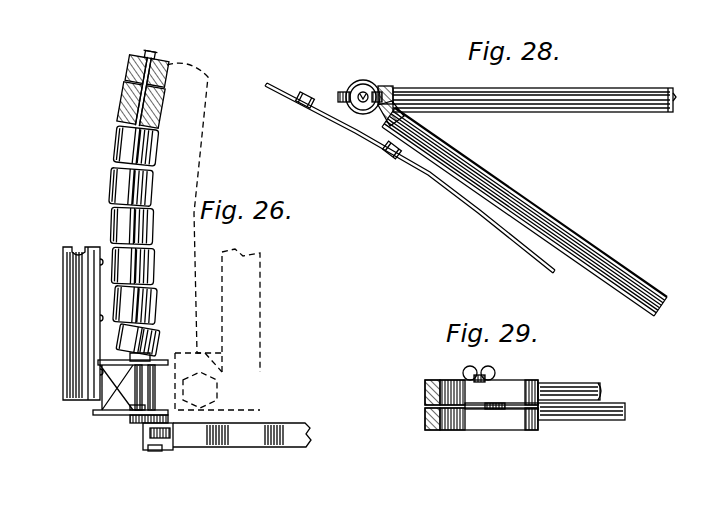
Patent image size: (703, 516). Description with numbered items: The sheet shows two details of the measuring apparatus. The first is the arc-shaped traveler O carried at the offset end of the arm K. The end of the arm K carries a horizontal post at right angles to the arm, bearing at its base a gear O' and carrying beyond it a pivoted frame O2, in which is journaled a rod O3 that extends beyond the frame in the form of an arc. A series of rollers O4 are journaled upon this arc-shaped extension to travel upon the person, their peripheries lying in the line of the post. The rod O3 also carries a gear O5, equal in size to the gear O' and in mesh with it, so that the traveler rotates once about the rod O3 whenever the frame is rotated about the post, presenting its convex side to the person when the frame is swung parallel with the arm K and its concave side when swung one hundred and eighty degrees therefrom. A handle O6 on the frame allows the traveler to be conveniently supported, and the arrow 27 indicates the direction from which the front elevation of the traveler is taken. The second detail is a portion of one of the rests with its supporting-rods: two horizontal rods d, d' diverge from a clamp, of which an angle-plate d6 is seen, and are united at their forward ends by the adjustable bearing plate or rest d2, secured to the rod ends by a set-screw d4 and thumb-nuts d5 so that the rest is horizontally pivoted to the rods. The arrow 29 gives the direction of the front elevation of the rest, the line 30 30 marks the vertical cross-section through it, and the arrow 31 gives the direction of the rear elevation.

In FIG. 26, the arc-shaped traveler O is at (141, 262).
In FIG. 26, the gear O' is at (166, 448).
In FIG. 26, the pivoted frame O2 is at (108, 415).
In FIG. 26, the rod O3 is at (150, 108).
In FIG. 26, the rollers O4 is at (155, 148).
In FIG. 26, the gear O5 is at (133, 423).
In FIG. 26, the handle O6 is at (64, 307).
In FIG. 26, the arm K is at (277, 440).
In FIG. 26, the arrow 27 is at (223, 462).
In FIG. 28, the arrow 29 is at (390, 178).
In FIG. 28, the section line 30 is at (382, 70).
In FIG. 28, the arrow 31 is at (339, 40).
In FIG. 28, the horizontal rod d is at (524, 212).
In FIG. 29, the horizontal rod d is at (539, 391).
In FIG. 28, the horizontal rod d' is at (537, 115).
In FIG. 29, the horizontal rod d' is at (539, 416).
In FIG. 28, the adjustable bearing plate or rest d2 is at (453, 198).
In FIG. 28, the set-screw d4 is at (370, 84).
In FIG. 29, the thumb-nut d5 is at (497, 373).
In FIG. 28, the angle-plate d6 is at (386, 92).